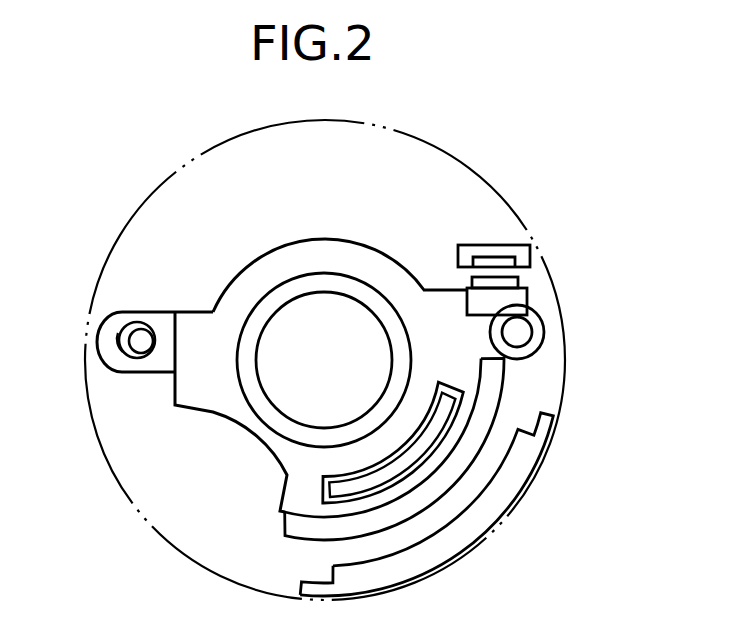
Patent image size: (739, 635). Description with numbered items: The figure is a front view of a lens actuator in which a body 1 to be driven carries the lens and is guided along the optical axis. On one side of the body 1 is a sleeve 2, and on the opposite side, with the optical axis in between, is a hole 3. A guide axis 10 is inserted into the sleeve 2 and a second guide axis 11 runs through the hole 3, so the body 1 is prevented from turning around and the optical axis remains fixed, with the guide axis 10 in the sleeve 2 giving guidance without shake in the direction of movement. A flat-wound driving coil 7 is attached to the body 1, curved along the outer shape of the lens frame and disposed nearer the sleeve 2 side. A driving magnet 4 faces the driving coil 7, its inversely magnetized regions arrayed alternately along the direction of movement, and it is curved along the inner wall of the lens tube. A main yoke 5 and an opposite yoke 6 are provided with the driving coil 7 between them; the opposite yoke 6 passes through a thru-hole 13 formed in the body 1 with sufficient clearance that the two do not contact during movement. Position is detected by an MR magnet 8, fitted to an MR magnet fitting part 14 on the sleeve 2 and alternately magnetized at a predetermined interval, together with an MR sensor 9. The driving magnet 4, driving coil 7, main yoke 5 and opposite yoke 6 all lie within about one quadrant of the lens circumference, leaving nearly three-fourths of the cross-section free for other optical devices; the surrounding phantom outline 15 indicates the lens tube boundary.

The body 1 is at (303, 238).
The sleeve 2 is at (533, 345).
The hole 3 is at (133, 330).
The driving magnet 4 is at (342, 562).
The main yoke 5 is at (497, 528).
The opposite yoke 6 is at (322, 490).
The driving coil 7 is at (280, 523).
The MR magnet 8 is at (518, 281).
The MR sensor 9 is at (502, 244).
The guide axis 10 is at (520, 334).
The guide axis 11 is at (137, 347).
The thru-hole 13 is at (473, 407).
The MR magnet fitting part 14 is at (467, 294).
The lens barrel outline 15 is at (227, 142).